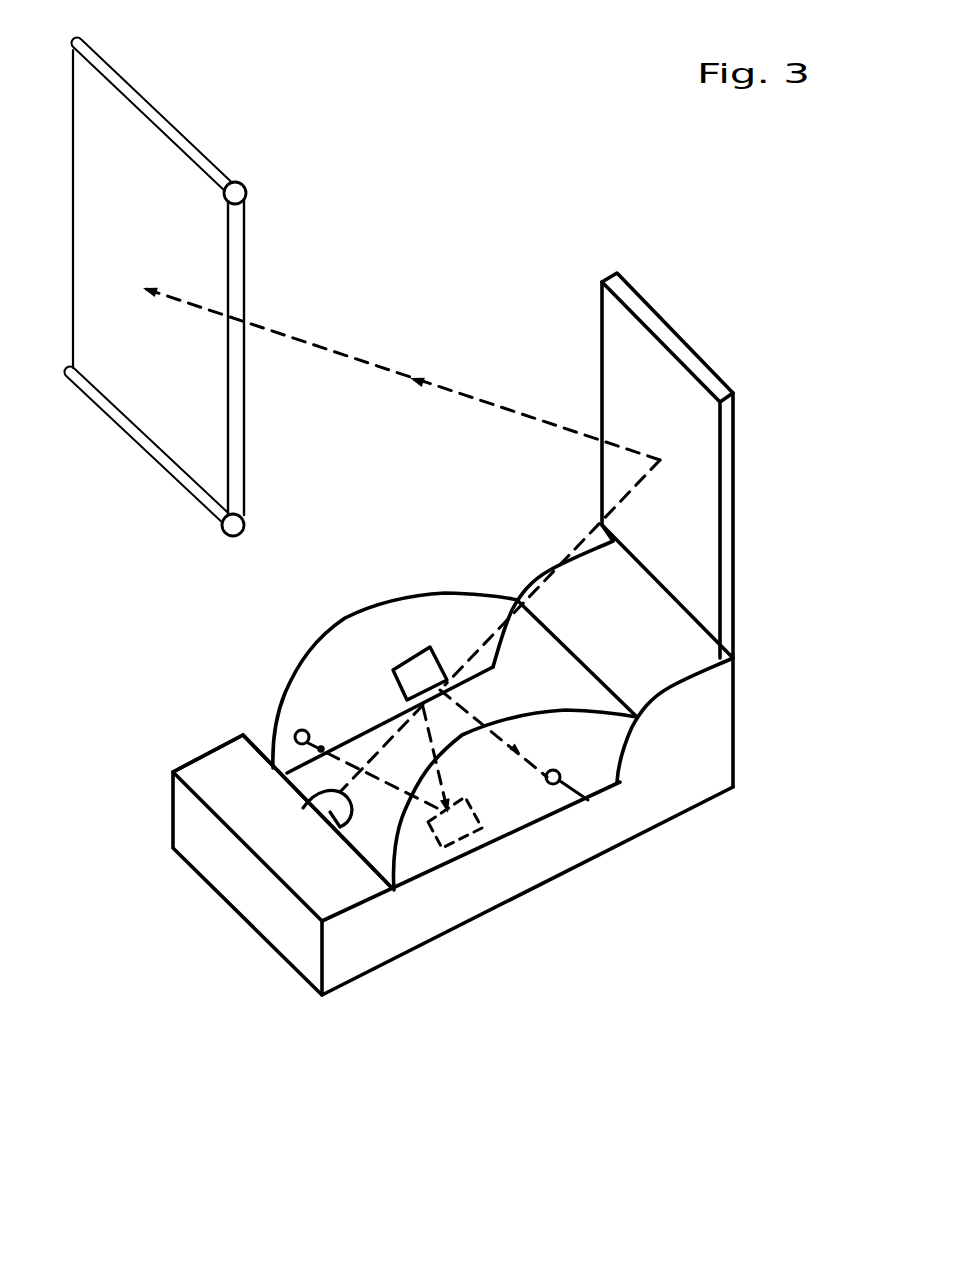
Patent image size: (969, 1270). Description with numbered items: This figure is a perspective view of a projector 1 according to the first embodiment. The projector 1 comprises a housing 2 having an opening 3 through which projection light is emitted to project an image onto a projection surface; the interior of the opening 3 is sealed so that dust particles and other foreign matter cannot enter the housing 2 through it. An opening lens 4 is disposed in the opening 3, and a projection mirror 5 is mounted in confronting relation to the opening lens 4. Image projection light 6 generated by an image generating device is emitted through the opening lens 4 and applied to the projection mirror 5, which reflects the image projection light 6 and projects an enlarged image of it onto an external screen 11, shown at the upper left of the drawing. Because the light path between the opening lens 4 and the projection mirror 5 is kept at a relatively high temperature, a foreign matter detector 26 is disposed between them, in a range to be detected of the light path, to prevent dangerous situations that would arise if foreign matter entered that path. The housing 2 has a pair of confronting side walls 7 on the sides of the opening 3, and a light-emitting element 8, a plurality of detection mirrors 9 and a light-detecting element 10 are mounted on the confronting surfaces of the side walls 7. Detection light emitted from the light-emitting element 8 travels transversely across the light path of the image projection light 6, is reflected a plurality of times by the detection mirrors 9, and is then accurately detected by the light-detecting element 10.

The projector 1 is at (405, 967).
The housing 2 is at (700, 778).
The opening 3 is at (370, 853).
The opening lens 4 is at (317, 817).
The projection mirror 5 is at (735, 490).
The image projection light 6 is at (495, 403).
The side walls 7 is at (463, 590).
The light-emitting element 8 is at (297, 731).
The detection mirrors 9 is at (423, 655).
The light-detecting element 10 is at (588, 800).
The external screen 11 is at (223, 167).
The foreign matter detector 26 is at (370, 490).